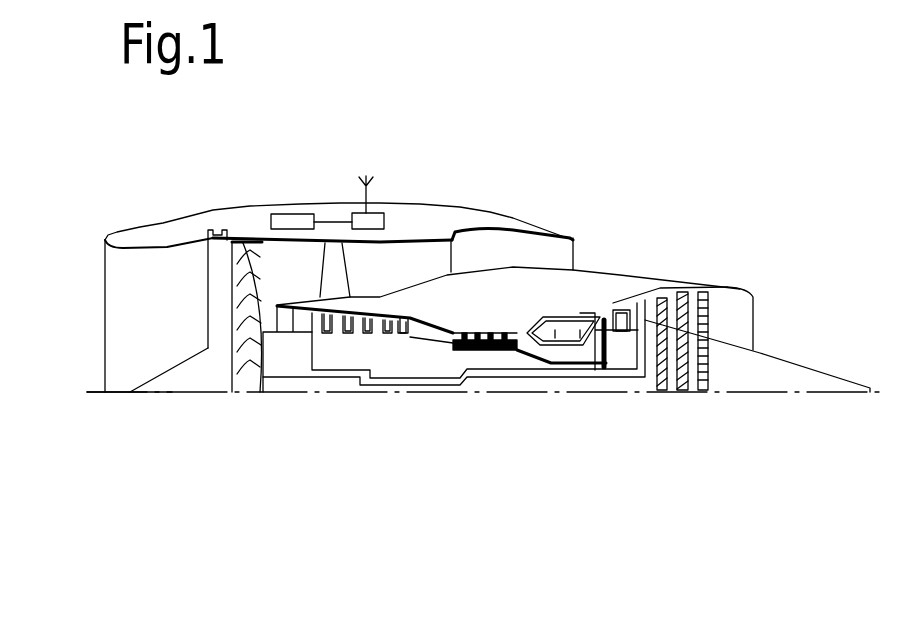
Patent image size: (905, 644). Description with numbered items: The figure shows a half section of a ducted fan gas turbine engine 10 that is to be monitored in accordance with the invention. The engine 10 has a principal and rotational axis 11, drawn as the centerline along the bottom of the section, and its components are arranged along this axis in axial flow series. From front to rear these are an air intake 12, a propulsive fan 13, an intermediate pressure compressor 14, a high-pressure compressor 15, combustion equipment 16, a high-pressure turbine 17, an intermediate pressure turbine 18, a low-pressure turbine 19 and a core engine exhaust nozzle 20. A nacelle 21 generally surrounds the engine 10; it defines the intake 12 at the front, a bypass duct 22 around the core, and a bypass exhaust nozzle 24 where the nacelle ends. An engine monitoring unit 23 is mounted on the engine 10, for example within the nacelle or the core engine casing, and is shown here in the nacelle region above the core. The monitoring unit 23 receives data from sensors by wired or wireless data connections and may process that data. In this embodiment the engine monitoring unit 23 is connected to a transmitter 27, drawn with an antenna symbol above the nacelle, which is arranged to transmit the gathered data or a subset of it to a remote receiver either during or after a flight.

The ducted fan gas turbine engine 10 is at (673, 184).
The principal and rotational axis 11 is at (102, 390).
The air intake 12 is at (118, 249).
The propulsive fan 13 is at (245, 263).
The intermediate pressure compressor 14 is at (366, 320).
The high-pressure compressor 15 is at (477, 333).
The combustion equipment 16 is at (545, 332).
The high-pressure turbine 17 is at (607, 320).
The intermediate pressure turbine 18 is at (643, 298).
The low-pressure turbine 19 is at (685, 292).
The core engine exhaust nozzle 20 is at (742, 307).
The nacelle 21 is at (170, 227).
The bypass duct 22 is at (408, 263).
The engine monitoring unit 23 is at (292, 218).
The bypass exhaust nozzle 24 is at (573, 240).
The transmitter 27 is at (372, 172).